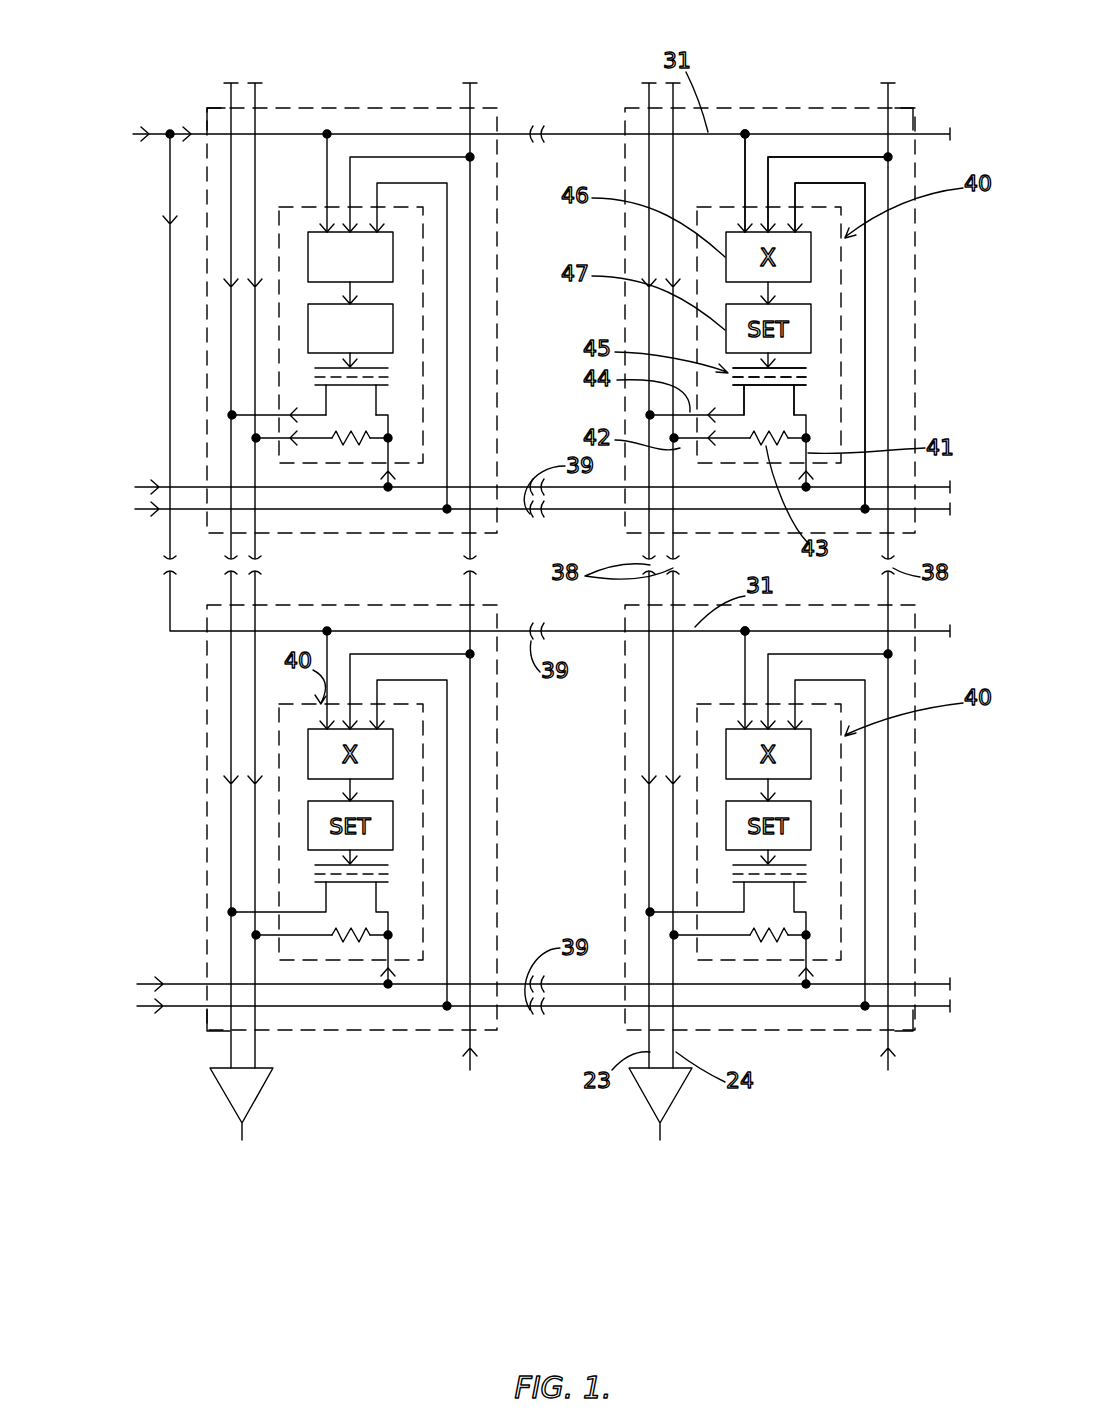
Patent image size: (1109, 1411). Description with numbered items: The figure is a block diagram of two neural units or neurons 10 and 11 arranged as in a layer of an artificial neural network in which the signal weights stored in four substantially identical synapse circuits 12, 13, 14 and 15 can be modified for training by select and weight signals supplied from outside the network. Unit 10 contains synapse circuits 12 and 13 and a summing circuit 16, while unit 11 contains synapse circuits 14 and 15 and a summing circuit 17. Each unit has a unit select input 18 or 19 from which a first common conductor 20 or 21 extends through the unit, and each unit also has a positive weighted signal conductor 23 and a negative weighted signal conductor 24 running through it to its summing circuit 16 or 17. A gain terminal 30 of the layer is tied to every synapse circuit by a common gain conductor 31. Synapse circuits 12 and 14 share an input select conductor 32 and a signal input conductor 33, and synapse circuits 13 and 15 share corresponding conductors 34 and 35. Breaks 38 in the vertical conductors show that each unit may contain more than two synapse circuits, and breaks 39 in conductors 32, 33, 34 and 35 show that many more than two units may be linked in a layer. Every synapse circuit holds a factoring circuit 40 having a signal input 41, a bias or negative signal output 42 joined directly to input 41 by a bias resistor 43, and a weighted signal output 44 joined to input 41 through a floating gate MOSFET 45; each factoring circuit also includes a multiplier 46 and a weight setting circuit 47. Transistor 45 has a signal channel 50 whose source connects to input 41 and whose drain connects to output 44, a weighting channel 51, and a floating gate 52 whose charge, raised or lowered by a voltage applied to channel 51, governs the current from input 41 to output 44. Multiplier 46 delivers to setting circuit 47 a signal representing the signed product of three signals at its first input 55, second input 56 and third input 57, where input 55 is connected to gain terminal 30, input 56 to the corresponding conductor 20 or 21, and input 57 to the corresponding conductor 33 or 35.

The neural unit 10 is at (363, 48).
The neural unit 11 is at (779, 46).
The synapse circuit 12 is at (204, 96).
The synapse circuit 13 is at (207, 1048).
The synapse circuit 14 is at (918, 100).
The synapse circuit 15 is at (916, 1046).
The summing circuit 16 is at (257, 1103).
The summing circuit 17 is at (677, 1103).
The unit select input 18 is at (470, 1048).
The unit select input 19 is at (893, 1052).
The first common conductor 20 is at (472, 95).
The first common conductor 21 is at (890, 98).
The positive weighted signal conductor 23 is at (230, 1050).
The negative weighted signal conductor 24 is at (257, 1052).
The gain terminal 30 is at (148, 131).
The common gain conductor 31 is at (170, 328).
The input select conductor 32 is at (150, 512).
The signal input conductor 33 is at (150, 487).
The input select conductor 34 is at (150, 1009).
The signal input conductor 35 is at (150, 983).
The breaks 38 is at (255, 570).
The breaks 39 is at (531, 143).
The factoring circuit 40 is at (311, 198).
The signal input 41 is at (392, 468).
The bias or negative signal output 42 is at (262, 445).
The bias resistor 43 is at (366, 436).
The weighted signal output 44 is at (272, 412).
The floating gate MOSFET 45 is at (395, 378).
The multiplier 46 is at (307, 257).
The weight setting circuit 47 is at (307, 330).
The signal channel 50 is at (768, 392).
The weighting channel 51 is at (806, 360).
The floating gate 52 is at (806, 380).
The first input 55 is at (748, 184).
The second input 56 is at (771, 194).
The third input 57 is at (800, 194).